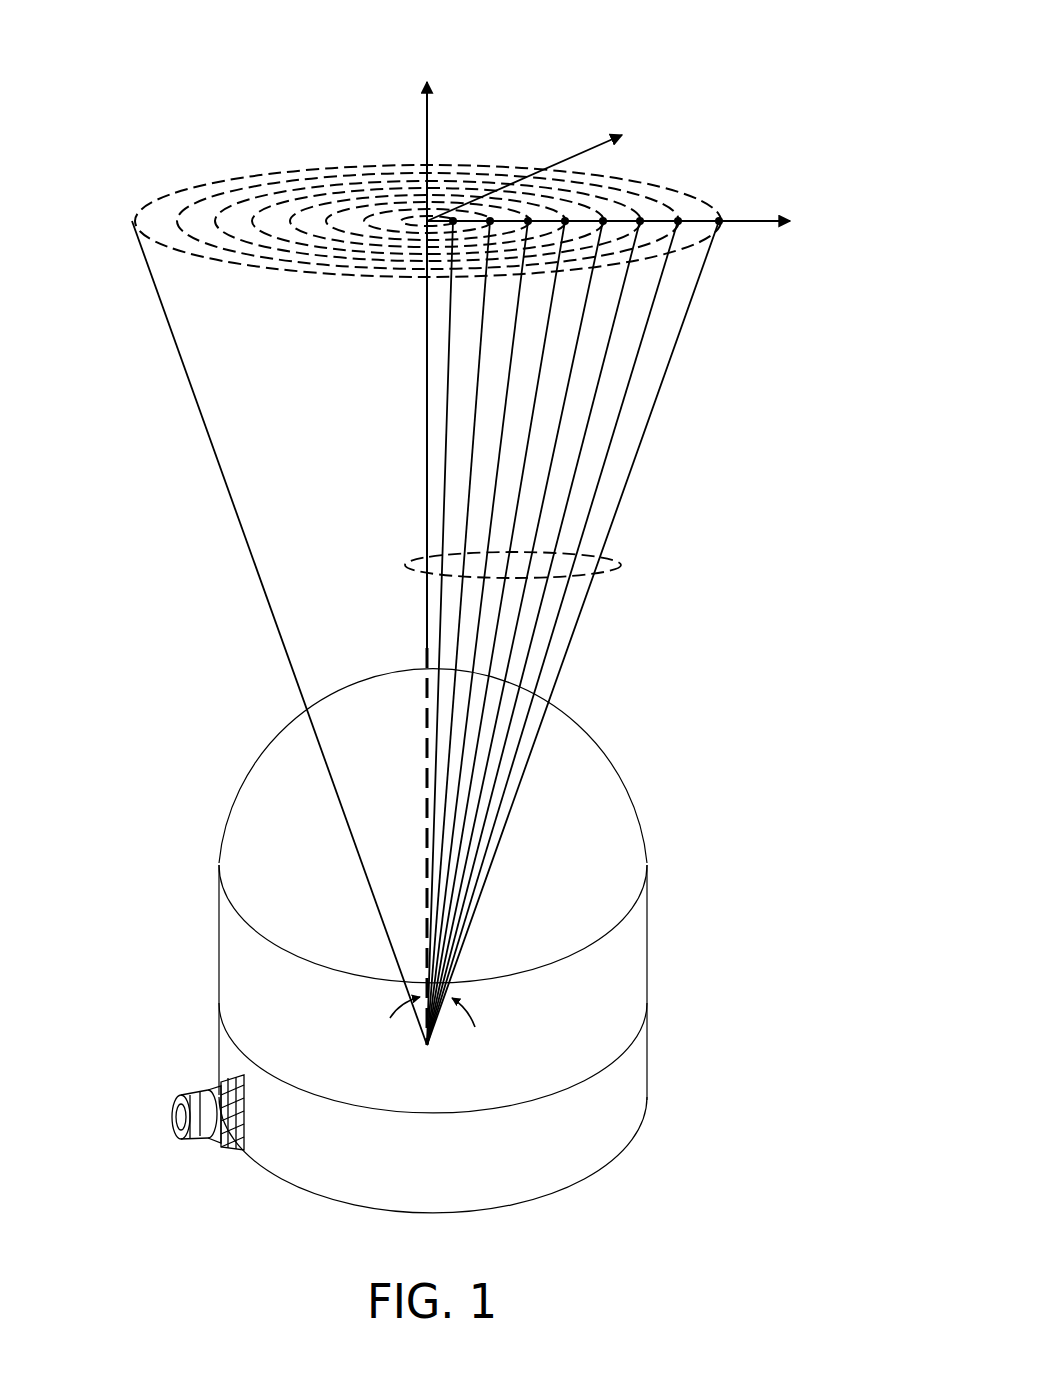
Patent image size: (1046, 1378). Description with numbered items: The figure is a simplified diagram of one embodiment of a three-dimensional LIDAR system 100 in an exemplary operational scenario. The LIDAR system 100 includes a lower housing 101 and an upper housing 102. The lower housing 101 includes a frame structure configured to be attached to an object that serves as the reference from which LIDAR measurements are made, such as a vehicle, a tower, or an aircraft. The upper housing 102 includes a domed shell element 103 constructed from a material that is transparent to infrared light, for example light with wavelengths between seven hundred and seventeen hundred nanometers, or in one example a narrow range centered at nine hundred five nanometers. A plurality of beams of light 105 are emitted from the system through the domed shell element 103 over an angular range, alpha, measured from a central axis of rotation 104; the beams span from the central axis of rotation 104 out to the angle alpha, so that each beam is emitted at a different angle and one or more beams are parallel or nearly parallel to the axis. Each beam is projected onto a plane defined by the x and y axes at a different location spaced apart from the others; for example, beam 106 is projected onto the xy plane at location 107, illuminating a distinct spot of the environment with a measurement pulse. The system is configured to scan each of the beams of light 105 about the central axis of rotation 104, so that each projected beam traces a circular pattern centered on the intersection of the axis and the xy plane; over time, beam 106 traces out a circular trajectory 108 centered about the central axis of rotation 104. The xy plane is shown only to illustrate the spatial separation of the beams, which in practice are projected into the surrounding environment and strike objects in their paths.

The 3-D LIDAR system 100 is at (146, 65).
The lower housing 101 is at (645, 1067).
The upper housing 102 is at (663, 663).
The domed shell element 103 is at (580, 836).
The central axis of rotation 104 is at (427, 137).
The plurality of beams of light 105 is at (622, 565).
The beam 106 is at (678, 338).
The location 107 is at (719, 221).
The circular trajectory 108 is at (637, 182).